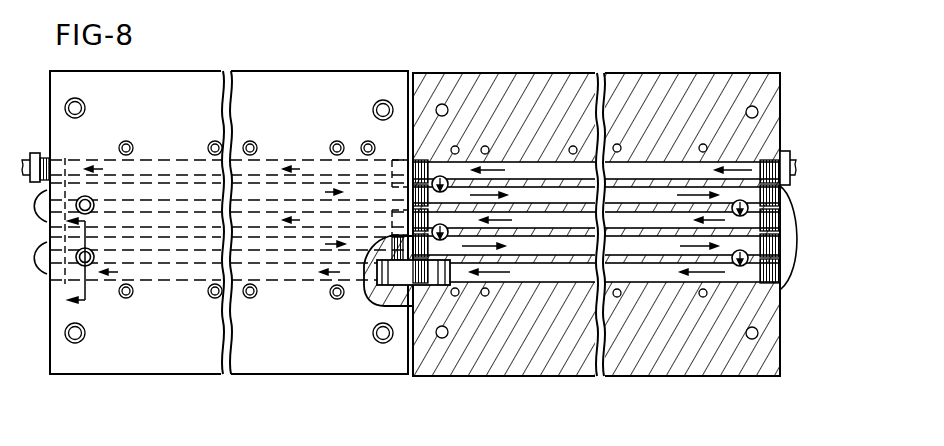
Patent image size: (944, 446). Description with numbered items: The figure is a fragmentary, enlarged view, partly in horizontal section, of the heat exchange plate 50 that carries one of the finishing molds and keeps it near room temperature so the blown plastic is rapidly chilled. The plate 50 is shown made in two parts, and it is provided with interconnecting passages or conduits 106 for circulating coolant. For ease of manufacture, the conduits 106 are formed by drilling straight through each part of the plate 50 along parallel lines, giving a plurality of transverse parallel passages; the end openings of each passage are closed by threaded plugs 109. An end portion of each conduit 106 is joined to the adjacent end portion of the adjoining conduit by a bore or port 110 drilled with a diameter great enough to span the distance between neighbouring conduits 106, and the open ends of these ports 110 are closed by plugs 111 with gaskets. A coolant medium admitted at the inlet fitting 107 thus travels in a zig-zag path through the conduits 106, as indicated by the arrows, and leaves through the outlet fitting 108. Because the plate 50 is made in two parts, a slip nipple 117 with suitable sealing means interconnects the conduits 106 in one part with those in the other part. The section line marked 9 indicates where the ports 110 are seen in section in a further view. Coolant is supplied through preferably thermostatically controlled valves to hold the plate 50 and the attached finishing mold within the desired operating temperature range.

The heat exchange plate 50 is at (238, 365).
The conduits 106 is at (262, 192).
The inlet fitting 107 is at (792, 162).
The outlet fitting 108 is at (41, 153).
The threaded plugs 109 is at (417, 238).
The port 110 is at (436, 178).
The plugs 111 is at (88, 197).
The slip nipple 117 is at (393, 277).
The section line 9- 9 is at (87, 264).